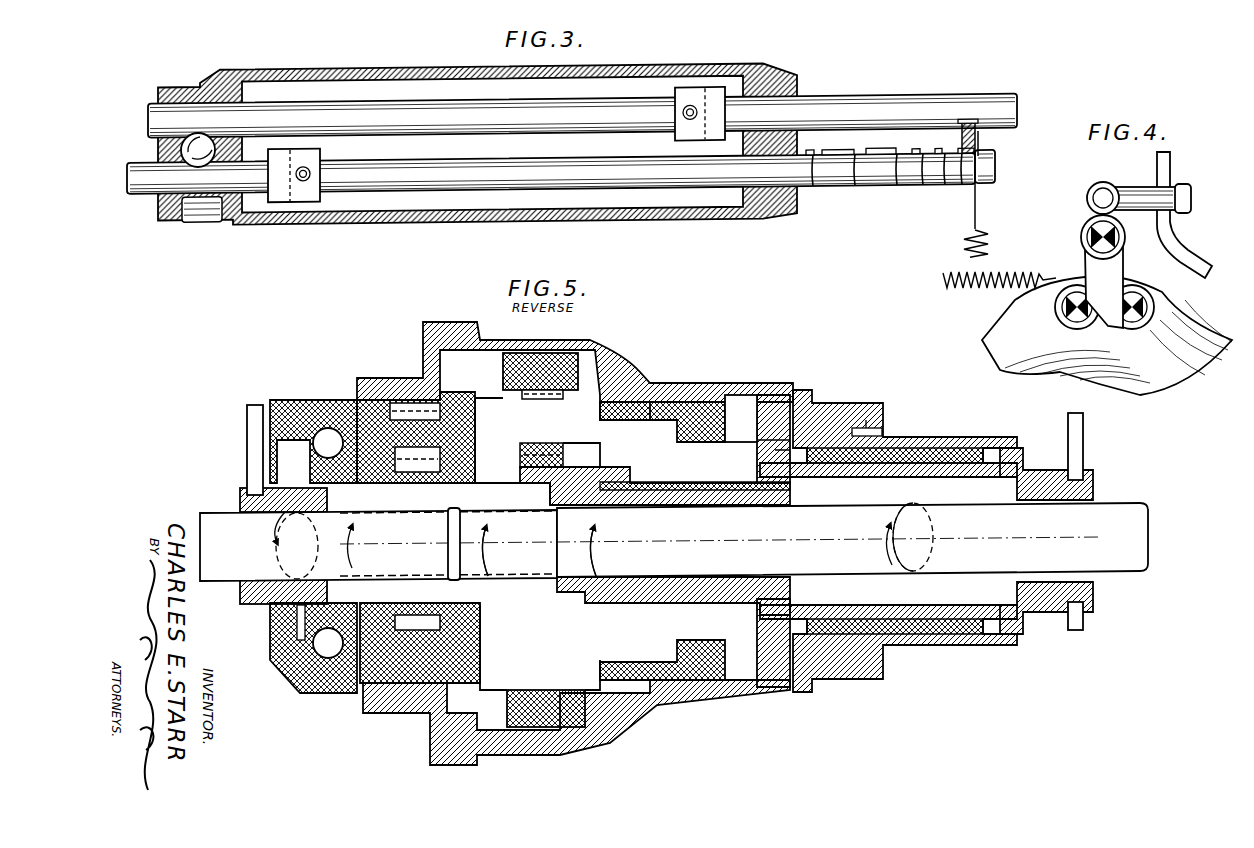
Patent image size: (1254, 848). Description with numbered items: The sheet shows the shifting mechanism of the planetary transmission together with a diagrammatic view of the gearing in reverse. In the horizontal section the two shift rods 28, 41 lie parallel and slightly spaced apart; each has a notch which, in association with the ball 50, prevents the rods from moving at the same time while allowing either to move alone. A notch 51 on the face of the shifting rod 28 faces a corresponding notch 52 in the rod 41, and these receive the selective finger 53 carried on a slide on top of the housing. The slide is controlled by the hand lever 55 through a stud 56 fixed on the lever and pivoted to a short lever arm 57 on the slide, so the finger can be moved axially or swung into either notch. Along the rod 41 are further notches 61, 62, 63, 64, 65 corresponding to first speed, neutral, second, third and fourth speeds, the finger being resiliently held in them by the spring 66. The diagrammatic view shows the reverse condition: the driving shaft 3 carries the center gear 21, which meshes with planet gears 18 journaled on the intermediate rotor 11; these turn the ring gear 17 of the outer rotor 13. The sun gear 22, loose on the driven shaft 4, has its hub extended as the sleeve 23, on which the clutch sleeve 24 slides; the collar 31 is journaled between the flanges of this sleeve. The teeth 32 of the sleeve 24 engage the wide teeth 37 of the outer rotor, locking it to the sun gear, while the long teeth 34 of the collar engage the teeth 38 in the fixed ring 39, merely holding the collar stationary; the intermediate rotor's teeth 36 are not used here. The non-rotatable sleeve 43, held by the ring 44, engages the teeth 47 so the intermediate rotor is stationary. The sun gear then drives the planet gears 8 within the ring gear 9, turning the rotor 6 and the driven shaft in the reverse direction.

In FIG. 5, the driving shaft 3 is at (248, 568).
In FIG. 5, the driven shaft 4 is at (718, 566).
In FIG. 5, the rotor 6 is at (515, 508).
In FIG. 5, the planet gears 8 is at (545, 440).
In FIG. 5, the ring gear 9 is at (580, 380).
In FIG. 5, the intermediate rotor 11 is at (642, 420).
In FIG. 5, the outer rotor 13 is at (590, 348).
In FIG. 5, the ring gear 17 is at (440, 394).
In FIG. 5, the planet gears 18 is at (418, 440).
In FIG. 5, the center gear 21 is at (418, 494).
In FIG. 5, the sun gear 22 is at (570, 472).
In FIG. 5, the sleeve 23 is at (655, 496).
In FIG. 5, the sleeve 24 is at (858, 466).
In FIG. 3, the shifting rod 28 is at (594, 120).
In FIG. 4, the shifting rod 28 is at (1170, 296).
In FIG. 5, the collar 31 is at (937, 456).
In FIG. 5, the teeth 32 is at (775, 457).
In FIG. 5, the long teeth 34 is at (948, 438).
In FIG. 5, the teeth 36 is at (716, 443).
In FIG. 5, the wide teeth 37 is at (765, 447).
In FIG. 5, the teeth 38 is at (885, 442).
In FIG. 5, the fixed ring 39 is at (880, 418).
In FIG. 3, the shift rod 41 is at (589, 180).
In FIG. 4, the shift rod 41 is at (1060, 320).
In FIG. 5, the sleeve 43 is at (270, 512).
In FIG. 5, the ring 44 is at (300, 466).
In FIG. 5, the teeth 47 is at (345, 521).
In FIG. 3, the ball 50 is at (190, 160).
In FIG. 3, the notch 51 is at (967, 128).
In FIG. 3, the notch 52 is at (962, 196).
In FIG. 3, the selective finger 53 is at (980, 150).
In FIG. 4, the selective finger 53 is at (1113, 284).
In FIG. 4, the hand lever 55 is at (1172, 168).
In FIG. 4, the stud 56 is at (1130, 186).
In FIG. 4, the lever arm 57 is at (1086, 212).
In FIG. 3, the notch 61 is at (939, 175).
In FIG. 3, the notch 62 is at (914, 176).
In FIG. 3, the notch 63 is at (881, 176).
In FIG. 3, the notch 64 is at (839, 176).
In FIG. 3, the notch 65 is at (809, 177).
In FIG. 3, the spring 66 is at (968, 246).
In FIG. 4, the spring 66 is at (1018, 276).